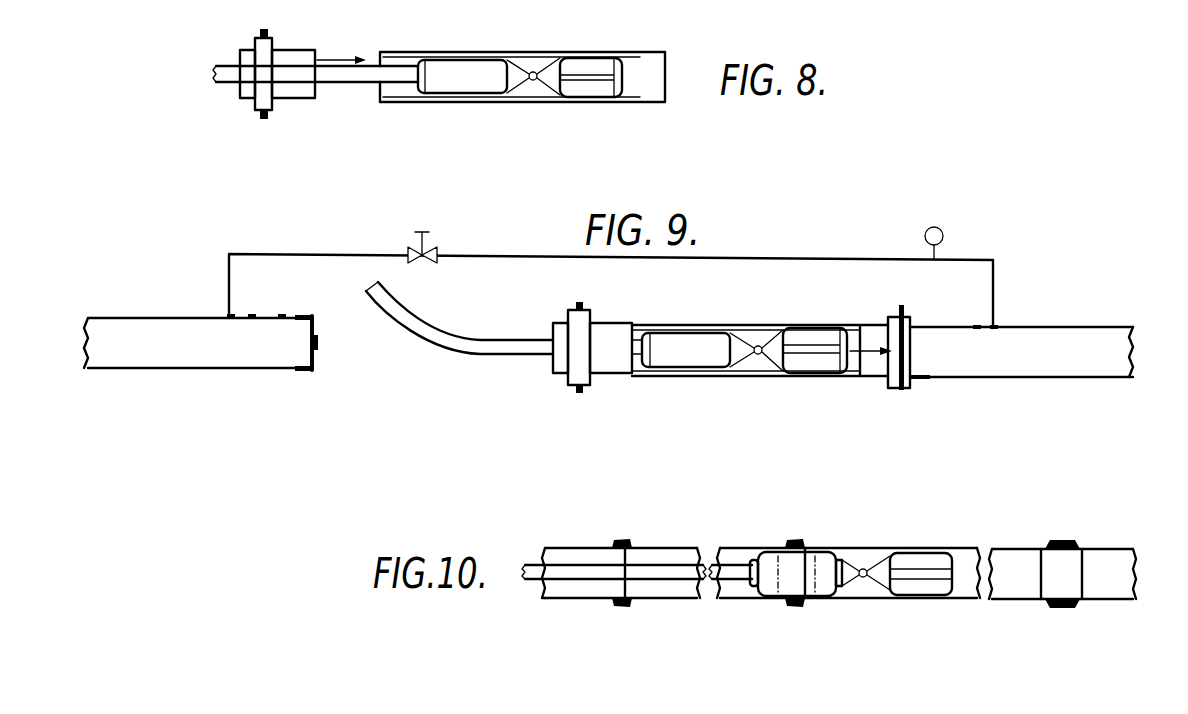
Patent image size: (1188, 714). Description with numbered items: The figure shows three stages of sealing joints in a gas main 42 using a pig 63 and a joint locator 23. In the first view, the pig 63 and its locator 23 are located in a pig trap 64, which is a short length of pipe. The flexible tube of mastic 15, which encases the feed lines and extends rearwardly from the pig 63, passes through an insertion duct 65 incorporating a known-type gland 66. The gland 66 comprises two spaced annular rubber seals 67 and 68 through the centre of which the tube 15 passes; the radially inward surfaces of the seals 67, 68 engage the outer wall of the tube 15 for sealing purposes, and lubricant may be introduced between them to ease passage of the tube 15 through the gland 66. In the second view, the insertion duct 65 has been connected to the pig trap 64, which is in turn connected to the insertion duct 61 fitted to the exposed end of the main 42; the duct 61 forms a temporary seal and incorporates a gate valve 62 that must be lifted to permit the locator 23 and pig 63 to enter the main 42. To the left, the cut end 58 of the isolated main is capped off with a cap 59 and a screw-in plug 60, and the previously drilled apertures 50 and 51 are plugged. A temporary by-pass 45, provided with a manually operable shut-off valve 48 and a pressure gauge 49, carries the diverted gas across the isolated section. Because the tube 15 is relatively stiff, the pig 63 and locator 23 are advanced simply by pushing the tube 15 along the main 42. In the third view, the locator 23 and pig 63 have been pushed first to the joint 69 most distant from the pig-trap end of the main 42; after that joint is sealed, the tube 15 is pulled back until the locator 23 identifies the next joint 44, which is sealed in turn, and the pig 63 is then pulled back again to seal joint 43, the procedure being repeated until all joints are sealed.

In FIG. 8, the flexible tube of mastic 15 is at (387, 70).
In FIG. 9, the flexible tube of mastic 15 is at (453, 341).
In FIG. 10, the flexible tube of mastic 15 is at (673, 579).
In FIG. 8, the joint locator device 23 is at (588, 59).
In FIG. 9, the joint locator device 23 is at (806, 328).
In FIG. 10, the joint locator device 23 is at (912, 553).
In FIG. 9, the gas main 42 is at (1060, 378).
In FIG. 10, the gas main 42 is at (883, 598).
In FIG. 10, the joint 43 is at (623, 545).
In FIG. 10, the joint 44 is at (801, 546).
In FIG. 9, the temporary by-pass 45 is at (736, 258).
In FIG. 9, the shut-off valve 48 is at (432, 250).
In FIG. 9, the pressure gauge 49 is at (944, 236).
In FIG. 9, the aperture 50 is at (252, 317).
In FIG. 9, the aperture 51 is at (283, 316).
In FIG. 9, the end of the main 58 is at (232, 369).
In FIG. 9, the cap 59 is at (313, 369).
In FIG. 9, the screw in plug 60 is at (320, 343).
In FIG. 9, the insertion duct 61 is at (882, 377).
In FIG. 9, the gate valve 62 is at (905, 318).
In FIG. 8, the pig 63 is at (447, 63).
In FIG. 9, the pig 63 is at (673, 338).
In FIG. 10, the pig 63 is at (808, 586).
In FIG. 8, the pig trap 64 is at (528, 103).
In FIG. 8, the insertion duct 65 is at (283, 50).
In FIG. 9, the insertion duct 65 is at (596, 324).
In FIG. 8, the gland 66 is at (255, 46).
In FIG. 9, the gland 66 is at (568, 384).
In FIG. 8, the annular rubber seal 67 is at (252, 86).
In FIG. 8, the annular rubber seal 68 is at (277, 86).
In FIG. 10, the joint 69 is at (1062, 550).